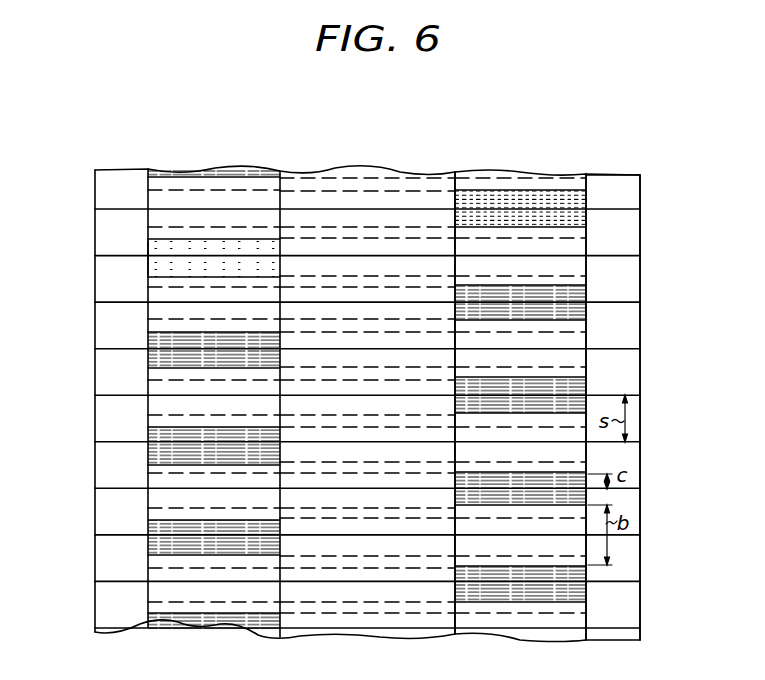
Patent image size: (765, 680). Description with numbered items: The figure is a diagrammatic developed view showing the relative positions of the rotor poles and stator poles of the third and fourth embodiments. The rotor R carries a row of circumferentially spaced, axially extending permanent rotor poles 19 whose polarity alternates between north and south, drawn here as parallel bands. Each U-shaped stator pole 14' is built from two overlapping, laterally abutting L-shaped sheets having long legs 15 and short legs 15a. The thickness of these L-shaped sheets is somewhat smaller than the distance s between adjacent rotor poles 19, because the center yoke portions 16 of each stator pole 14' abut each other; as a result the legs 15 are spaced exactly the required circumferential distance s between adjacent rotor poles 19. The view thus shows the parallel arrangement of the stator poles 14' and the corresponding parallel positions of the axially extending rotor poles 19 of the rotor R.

The stator pole 14' is at (535, 386).
The long legs 15 is at (168, 340).
The short legs 15a is at (200, 188).
The center yoke portions 16 is at (315, 243).
The rotor poles 19 is at (107, 207).
The rotor R is at (617, 180).